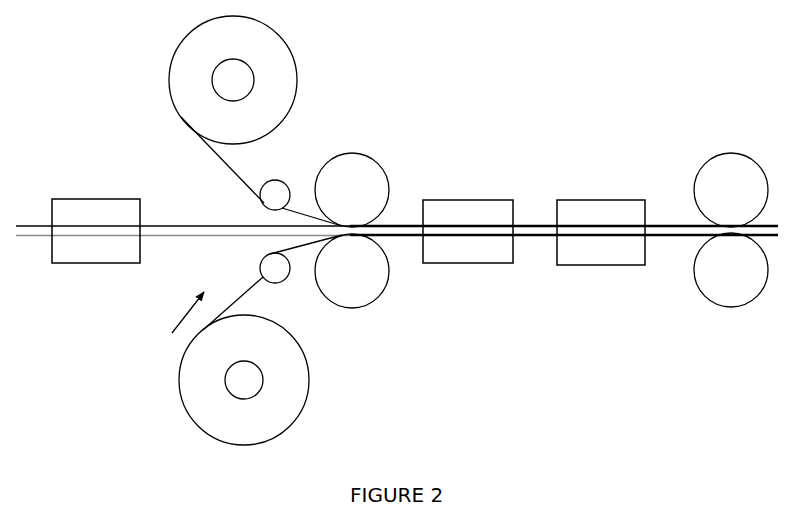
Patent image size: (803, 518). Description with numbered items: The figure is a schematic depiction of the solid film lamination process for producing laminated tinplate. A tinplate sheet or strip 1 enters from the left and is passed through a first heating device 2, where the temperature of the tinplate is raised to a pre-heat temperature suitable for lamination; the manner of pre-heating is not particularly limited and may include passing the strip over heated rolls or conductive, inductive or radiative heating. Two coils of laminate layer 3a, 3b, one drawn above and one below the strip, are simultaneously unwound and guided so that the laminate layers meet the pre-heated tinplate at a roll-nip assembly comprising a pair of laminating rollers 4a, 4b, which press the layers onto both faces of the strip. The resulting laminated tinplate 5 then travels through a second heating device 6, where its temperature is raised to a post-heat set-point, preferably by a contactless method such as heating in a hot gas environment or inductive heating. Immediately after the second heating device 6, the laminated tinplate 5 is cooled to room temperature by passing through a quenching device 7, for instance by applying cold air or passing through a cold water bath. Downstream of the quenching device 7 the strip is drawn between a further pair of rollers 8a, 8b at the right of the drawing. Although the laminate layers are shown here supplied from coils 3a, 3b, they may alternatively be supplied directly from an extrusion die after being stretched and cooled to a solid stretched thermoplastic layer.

The tinplate sheet or strip 1 is at (26, 224).
The first heating device 2 is at (80, 197).
The coil of laminate layer 3a is at (243, 118).
The coil of laminate layer 3b is at (243, 343).
The laminating roller 4a is at (352, 175).
The laminating roller 4b is at (352, 286).
The laminated tinplate 5 is at (400, 223).
The second heating device 6 is at (468, 198).
The quenching device 7 is at (600, 198).
The upper take-off roller 8a is at (731, 173).
The lower take-off roller 8b is at (731, 285).